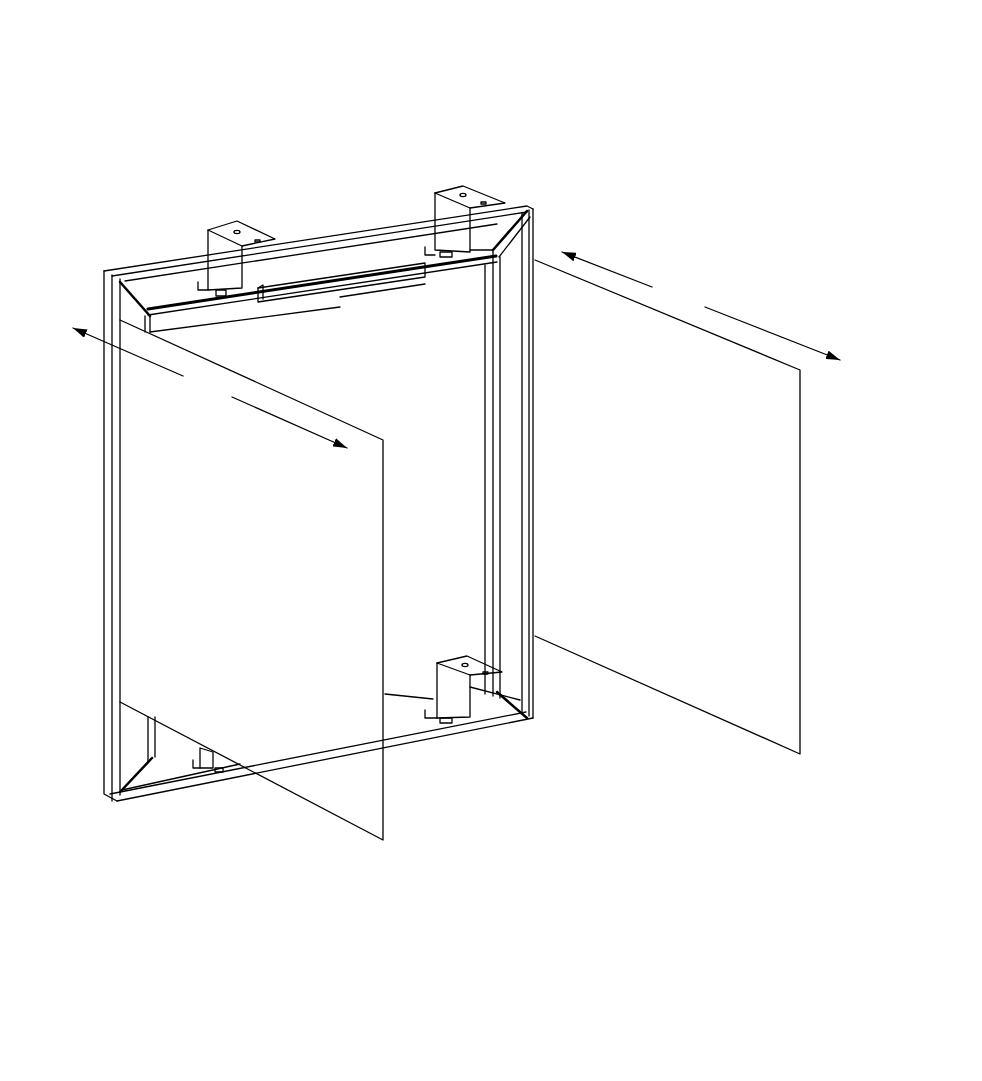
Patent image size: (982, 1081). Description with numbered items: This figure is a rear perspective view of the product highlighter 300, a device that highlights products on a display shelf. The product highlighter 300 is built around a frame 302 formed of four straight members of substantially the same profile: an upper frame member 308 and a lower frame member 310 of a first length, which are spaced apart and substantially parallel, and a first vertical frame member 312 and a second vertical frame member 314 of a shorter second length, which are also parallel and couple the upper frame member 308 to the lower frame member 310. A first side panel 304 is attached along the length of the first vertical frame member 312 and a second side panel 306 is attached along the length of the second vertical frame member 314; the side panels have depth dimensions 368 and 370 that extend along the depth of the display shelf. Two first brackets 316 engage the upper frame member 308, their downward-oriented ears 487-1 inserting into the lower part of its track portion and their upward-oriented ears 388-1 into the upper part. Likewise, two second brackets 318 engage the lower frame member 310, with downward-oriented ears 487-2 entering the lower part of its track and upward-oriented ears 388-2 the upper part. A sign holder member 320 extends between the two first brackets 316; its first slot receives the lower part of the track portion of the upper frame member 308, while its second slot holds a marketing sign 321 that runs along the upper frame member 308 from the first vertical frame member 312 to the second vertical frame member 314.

The product highlighter 300 is at (561, 152).
The frame 302 is at (327, 485).
The first side panel 304 is at (330, 763).
The second side panel 306 is at (714, 675).
The upper frame member 308 is at (308, 240).
The lower frame member 310 is at (432, 733).
The first vertical frame member 312 is at (108, 578).
The second vertical frame member 314 is at (530, 660).
The first bracket 316 is at (230, 228).
The second bracket 318 is at (218, 766).
The sign holder member 320 is at (347, 288).
The marketing sign 321 is at (418, 292).
The depth dimension 368 is at (210, 388).
The depth dimension 370 is at (701, 306).
The upward-oriented ear 388-1 is at (202, 275).
The upward-oriented ear 388-2 is at (200, 747).
The downward-oriented ear 487-1 is at (222, 298).
The downward-oriented ear 487-2 is at (223, 770).